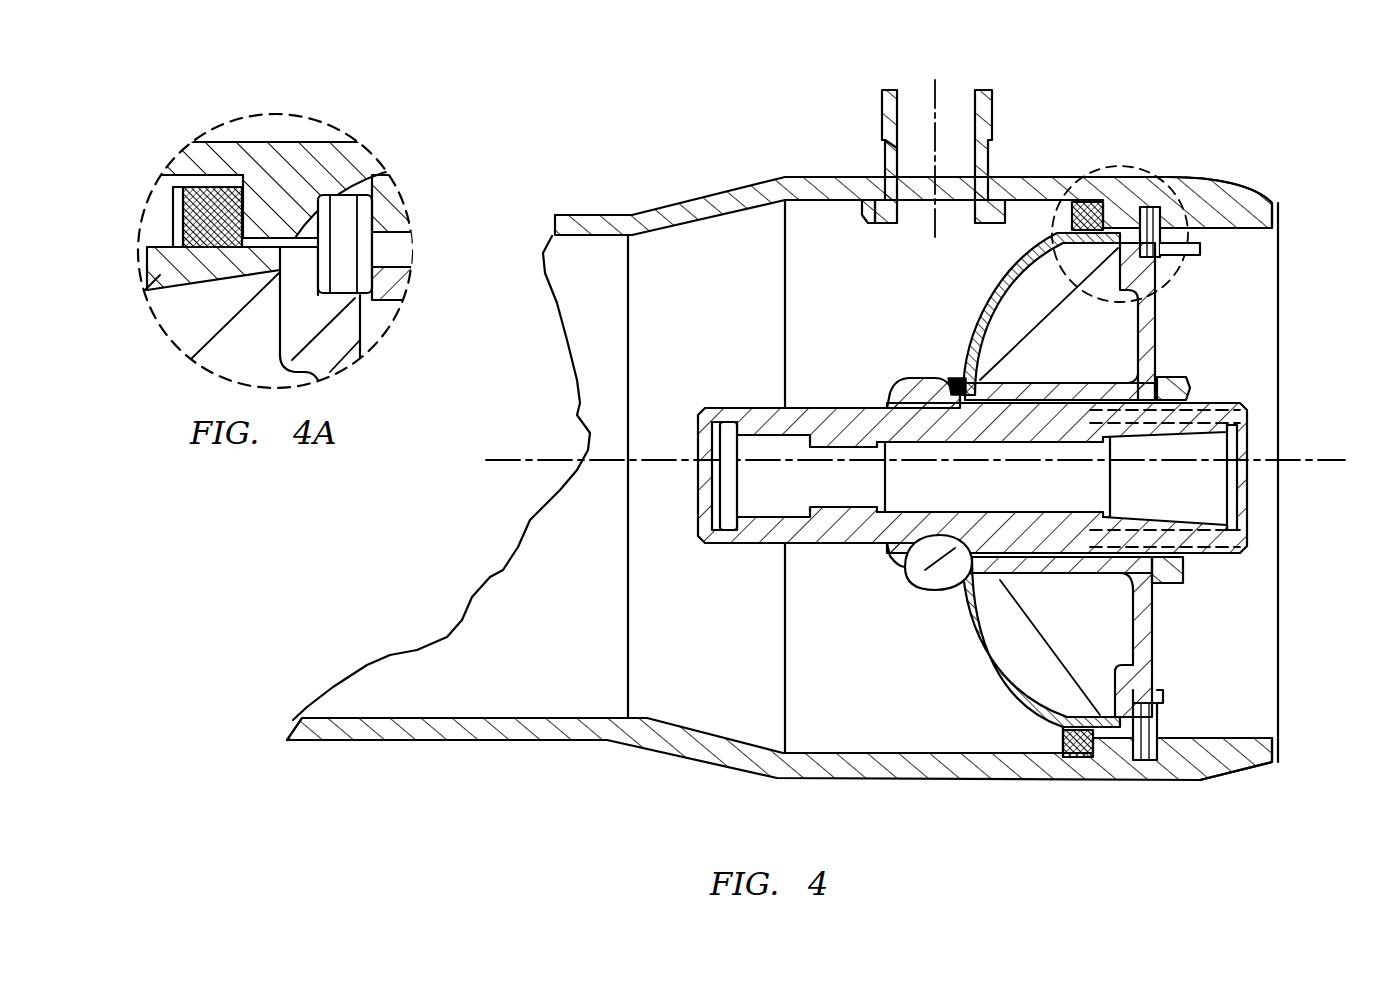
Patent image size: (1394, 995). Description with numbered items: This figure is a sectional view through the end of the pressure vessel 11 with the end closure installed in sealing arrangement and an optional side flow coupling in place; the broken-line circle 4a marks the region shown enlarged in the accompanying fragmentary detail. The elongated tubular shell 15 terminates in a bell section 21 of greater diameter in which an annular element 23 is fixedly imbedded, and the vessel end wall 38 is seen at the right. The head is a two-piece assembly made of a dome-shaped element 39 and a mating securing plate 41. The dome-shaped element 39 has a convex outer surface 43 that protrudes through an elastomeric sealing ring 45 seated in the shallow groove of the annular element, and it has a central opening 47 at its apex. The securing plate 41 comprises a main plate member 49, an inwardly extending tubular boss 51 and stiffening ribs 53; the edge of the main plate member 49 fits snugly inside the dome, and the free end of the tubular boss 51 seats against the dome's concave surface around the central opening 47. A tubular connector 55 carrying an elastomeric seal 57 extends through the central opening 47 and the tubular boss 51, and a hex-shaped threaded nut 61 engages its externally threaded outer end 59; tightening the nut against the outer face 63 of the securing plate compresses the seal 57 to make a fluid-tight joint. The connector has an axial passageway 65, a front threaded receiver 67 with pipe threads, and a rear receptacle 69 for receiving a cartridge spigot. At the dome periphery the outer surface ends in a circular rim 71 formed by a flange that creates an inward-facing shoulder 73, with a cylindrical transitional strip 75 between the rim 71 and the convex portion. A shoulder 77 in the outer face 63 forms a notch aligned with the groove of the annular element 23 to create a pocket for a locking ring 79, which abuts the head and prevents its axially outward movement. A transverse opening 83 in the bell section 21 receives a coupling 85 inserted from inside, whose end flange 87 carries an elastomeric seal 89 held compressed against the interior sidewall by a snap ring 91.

In FIG. 4, the pressure vessel 11 is at (652, 157).
In FIG. 4, the tubular shell 15 is at (577, 212).
In FIG. 4, the bell section 21 is at (940, 780).
In FIG. 4, the annular element 23 is at (1200, 178).
In FIG. 4, the end wall 38 is at (1280, 210).
In FIG. 4, the dome-shaped element 39 is at (970, 647).
In FIG. 4A, the dome-shaped element 39 is at (110, 281).
In FIG. 4, the securing plate 41 is at (1163, 641).
In FIG. 4, the convex outer surface 43 is at (993, 290).
In FIG. 4, the sealing ring 45 is at (1085, 198).
In FIG. 4, the central opening 47 is at (900, 560).
In FIG. 4, the main plate member 49 is at (1140, 672).
In FIG. 4, the tubular boss 51 is at (1033, 385).
In FIG. 4, the stiffening ribs 53 is at (1066, 338).
In FIG. 4, the tubular connector 55 is at (808, 405).
In FIG. 4, the elastomeric seal 57 is at (960, 380).
In FIG. 4, the externally threaded outer end 59 is at (1228, 400).
In FIG. 4, the threaded nut 61 is at (1180, 377).
In FIG. 4, the outer face 63 is at (1160, 603).
In FIG. 4, the passageway 65 is at (1029, 500).
In FIG. 4, the front threaded receiver 67 is at (1197, 502).
In FIG. 4, the rear receptacle 69 is at (750, 497).
In FIG. 4, the rim 71 is at (1150, 772).
In FIG. 4, the shoulder 73 is at (1090, 770).
In FIG. 4, the cylindrical transitional strip 75 is at (1063, 740).
In FIG. 4, the shoulder 77 is at (1135, 700).
In FIG. 4, the locking ring 79 is at (1180, 235).
In FIG. 4, the transverse opening 83 is at (893, 148).
In FIG. 4, the coupling 85 is at (992, 115).
In FIG. 4, the end flange 87 is at (880, 230).
In FIG. 4, the elastomeric seal 89 is at (810, 180).
In FIG. 4, the snap ring 91 is at (995, 180).
In FIG. 4, the detail circle 4a is at (1052, 222).